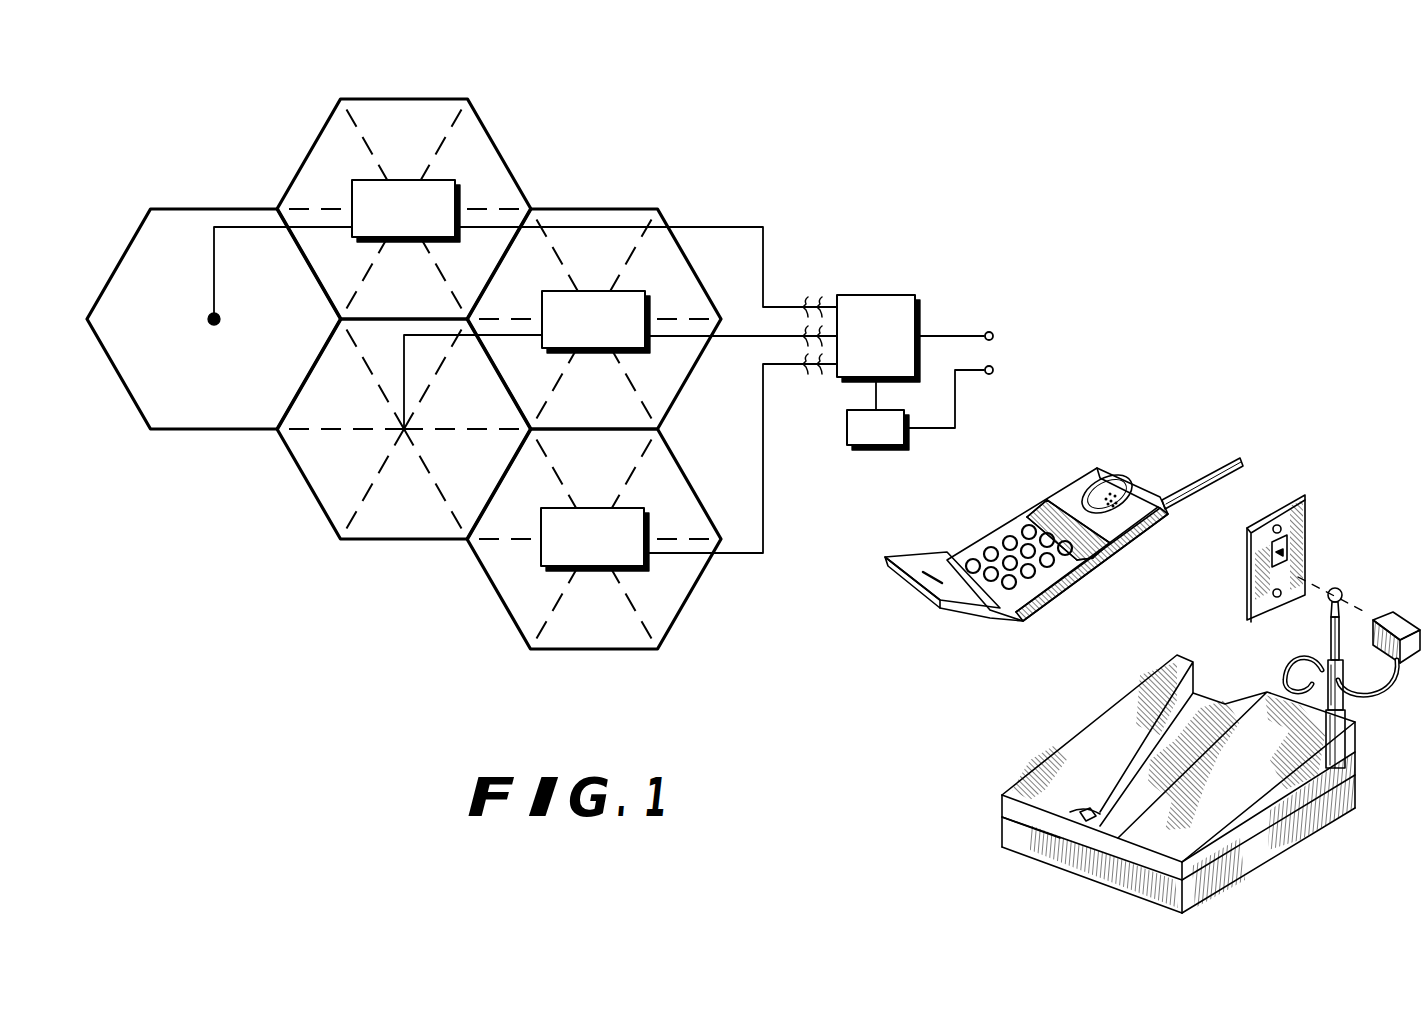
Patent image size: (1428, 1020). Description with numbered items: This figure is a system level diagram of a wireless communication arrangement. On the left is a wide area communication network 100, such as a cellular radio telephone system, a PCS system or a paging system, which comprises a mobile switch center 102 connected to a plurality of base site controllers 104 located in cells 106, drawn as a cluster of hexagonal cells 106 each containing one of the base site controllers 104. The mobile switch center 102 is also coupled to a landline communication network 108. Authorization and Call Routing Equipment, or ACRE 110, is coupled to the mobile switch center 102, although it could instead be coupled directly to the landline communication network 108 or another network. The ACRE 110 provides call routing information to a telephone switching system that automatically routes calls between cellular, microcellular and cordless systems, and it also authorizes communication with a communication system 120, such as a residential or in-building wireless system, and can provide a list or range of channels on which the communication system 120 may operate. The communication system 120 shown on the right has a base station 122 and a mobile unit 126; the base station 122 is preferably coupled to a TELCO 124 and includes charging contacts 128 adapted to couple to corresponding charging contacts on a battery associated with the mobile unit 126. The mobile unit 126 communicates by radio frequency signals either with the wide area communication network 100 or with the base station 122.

The wide area communication network 100 is at (769, 174).
The mobile switch center 102 is at (880, 295).
The base site controllers 104 is at (460, 186).
The cells 106 is at (222, 209).
The landline communication network 108 is at (1043, 318).
The Authorization and Call Routing Equipment (ACRE) 110 is at (874, 448).
The communication system 120 is at (1278, 406).
The base station 122 is at (1280, 857).
The TELCO 124 is at (1247, 556).
The mobile unit 126 is at (1098, 468).
The charging contacts 128 is at (1004, 819).